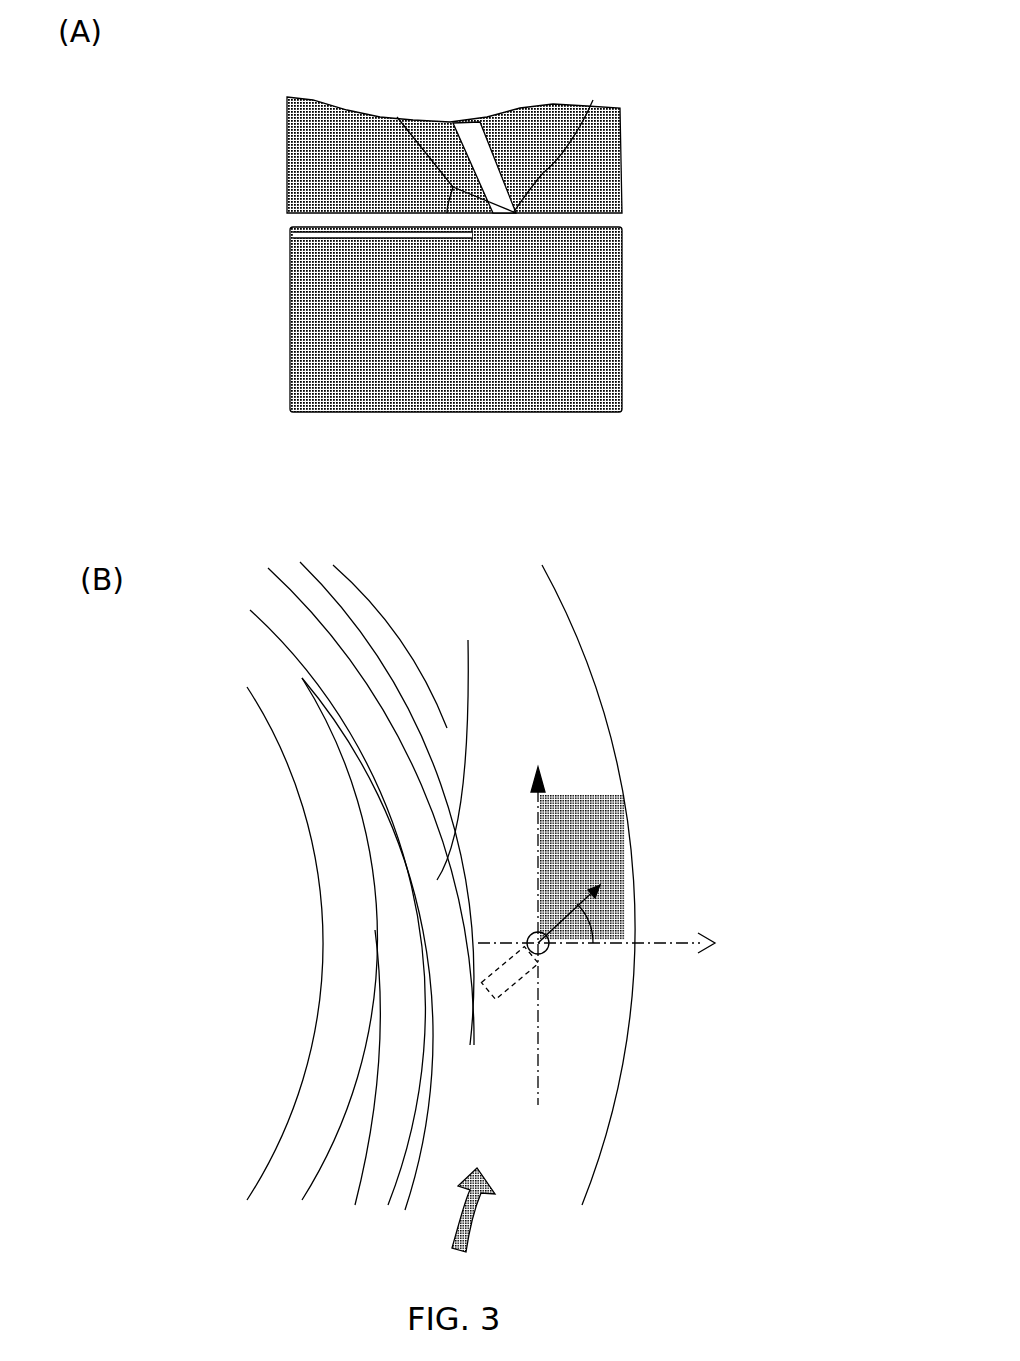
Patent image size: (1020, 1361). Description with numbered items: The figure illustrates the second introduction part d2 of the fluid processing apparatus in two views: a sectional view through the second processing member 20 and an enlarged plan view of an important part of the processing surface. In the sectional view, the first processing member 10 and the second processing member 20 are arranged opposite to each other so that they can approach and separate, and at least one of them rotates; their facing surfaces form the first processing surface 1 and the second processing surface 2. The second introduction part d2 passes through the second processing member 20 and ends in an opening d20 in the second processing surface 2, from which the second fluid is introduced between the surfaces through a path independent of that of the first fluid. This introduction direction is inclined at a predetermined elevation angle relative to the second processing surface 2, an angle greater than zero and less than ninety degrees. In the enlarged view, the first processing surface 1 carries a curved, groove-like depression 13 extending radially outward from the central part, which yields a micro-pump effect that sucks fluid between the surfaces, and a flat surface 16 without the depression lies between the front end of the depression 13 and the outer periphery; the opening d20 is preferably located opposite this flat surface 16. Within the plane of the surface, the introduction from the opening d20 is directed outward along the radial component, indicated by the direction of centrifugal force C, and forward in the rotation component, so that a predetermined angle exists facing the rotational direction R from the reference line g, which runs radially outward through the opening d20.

The first processing surface 1 is at (540, 227).
The second processing surface 2 is at (380, 213).
The first processing member 10 is at (290, 323).
The groove-like depression 13 is at (318, 240).
The flat surface 16 is at (437, 880).
The second processing member 20 is at (287, 147).
The second introduction part d2 is at (462, 153).
The opening d20 is at (593, 100).
The reference line g is at (655, 947).
The direction of centrifugal force C is at (612, 947).
The rotational direction R is at (487, 1210).